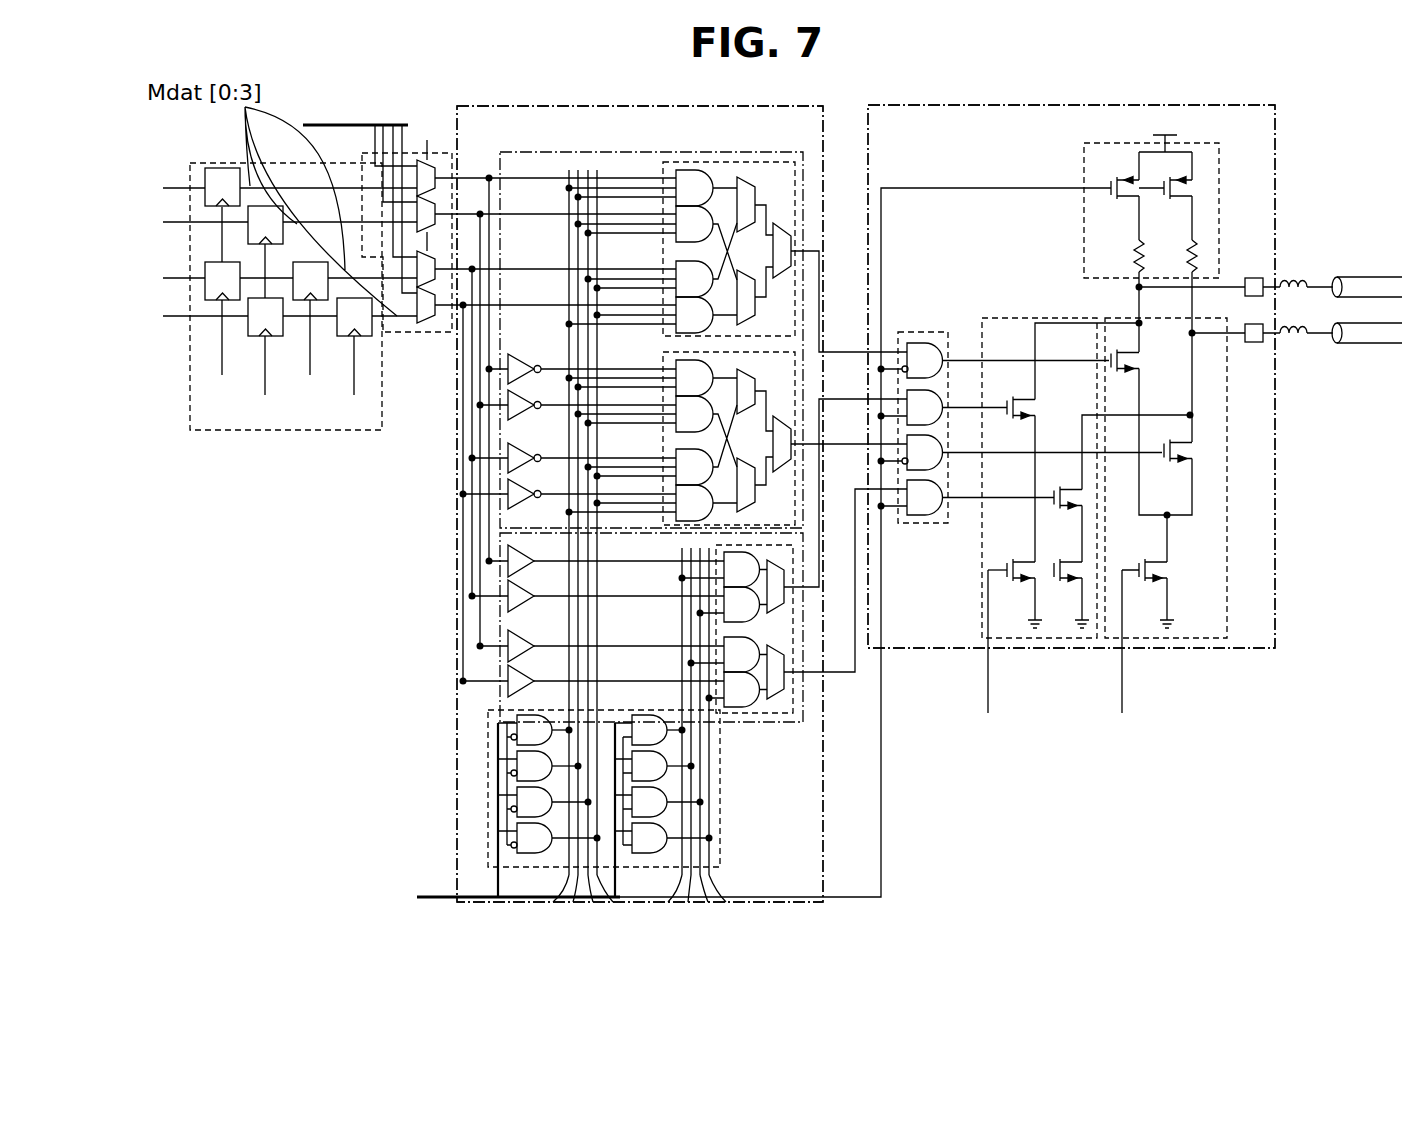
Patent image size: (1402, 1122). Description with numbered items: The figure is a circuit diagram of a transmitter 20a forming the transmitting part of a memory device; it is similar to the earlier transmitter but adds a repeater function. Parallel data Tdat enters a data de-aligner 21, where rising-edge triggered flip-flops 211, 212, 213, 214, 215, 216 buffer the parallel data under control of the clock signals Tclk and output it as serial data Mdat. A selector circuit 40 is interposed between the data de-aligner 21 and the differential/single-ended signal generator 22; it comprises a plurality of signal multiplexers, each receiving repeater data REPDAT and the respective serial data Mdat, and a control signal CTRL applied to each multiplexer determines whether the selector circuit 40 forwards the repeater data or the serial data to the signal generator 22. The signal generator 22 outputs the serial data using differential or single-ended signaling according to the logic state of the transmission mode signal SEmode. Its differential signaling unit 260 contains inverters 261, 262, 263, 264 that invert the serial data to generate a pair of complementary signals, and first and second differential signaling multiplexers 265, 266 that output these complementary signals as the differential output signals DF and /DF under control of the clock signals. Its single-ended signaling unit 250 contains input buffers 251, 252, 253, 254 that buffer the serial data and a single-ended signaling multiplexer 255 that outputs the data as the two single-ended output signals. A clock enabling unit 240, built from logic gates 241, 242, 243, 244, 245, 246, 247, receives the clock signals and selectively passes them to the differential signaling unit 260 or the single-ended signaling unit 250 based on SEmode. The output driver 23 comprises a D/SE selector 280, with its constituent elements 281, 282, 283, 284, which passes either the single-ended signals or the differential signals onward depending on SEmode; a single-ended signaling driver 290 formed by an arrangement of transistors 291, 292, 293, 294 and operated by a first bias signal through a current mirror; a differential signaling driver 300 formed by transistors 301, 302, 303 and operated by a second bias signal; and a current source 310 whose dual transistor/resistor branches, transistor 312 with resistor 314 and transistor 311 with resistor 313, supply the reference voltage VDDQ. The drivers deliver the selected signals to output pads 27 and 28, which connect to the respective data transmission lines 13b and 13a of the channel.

The transmitter 20a is at (1295, 82).
The data de-aligner 21 is at (293, 430).
The flip-flop 216 is at (222, 187).
The flip-flop 215 is at (265, 225).
The flip-flop 213 is at (222, 281).
The flip-flop 214 is at (310, 281).
The flip-flop 211 is at (265, 317).
The flip-flop 212 is at (354, 317).
The selector circuit 40 is at (425, 332).
The differential/single-ended (D/SE) signal generator 22 is at (457, 777).
The differential signaling unit 260 is at (748, 152).
The second differential signaling multiplexer 266 is at (688, 162).
The first differential signaling multiplexer 265 is at (663, 352).
The inverter 264 is at (520, 358).
The inverter 263 is at (520, 397).
The inverter 262 is at (520, 447).
The inverter 261 is at (520, 485).
The single-ended signaling unit 250 is at (787, 722).
The input buffer 254 is at (520, 550).
The input buffer 253 is at (520, 588).
The input buffer 252 is at (520, 636).
The input buffer 251 is at (520, 672).
The single-ended signaling multiplexer 255 is at (750, 713).
The clock enabling unit 240 is at (720, 817).
The logic gate 244 is at (545, 730).
The logic gate 243 is at (549, 766).
The logic gate 242 is at (554, 802).
The logic gate 241 is at (559, 838).
The logic gate 245 is at (672, 784).
The logic gate 247 is at (663, 766).
The logic gate 246 is at (668, 802).
The D/SE selector 280 is at (927, 332).
The AND gate 284 is at (1008, 360).
The AND gate 282 is at (957, 407).
The AND gate 283 is at (1034, 452).
The AND gate 281 is at (980, 497).
The output driver 23 is at (1218, 648).
The single-ended signaling driver 290 is at (1015, 318).
The transistor 292 is at (1035, 408).
The transistor 291 is at (1069, 487).
The transistor 294 is at (1016, 559).
The transistor 293 is at (1068, 559).
The current source 310 is at (1084, 160).
The transistor 312 is at (1119, 179).
The transistor 311 is at (1191, 188).
The resistor 314 is at (1126, 256).
The resistor 313 is at (1180, 253).
The differential signaling driver 300 is at (1227, 587).
The transistor 302 is at (1140, 361).
The transistor 301 is at (1193, 451).
The transistor 303 is at (1168, 570).
The output pad 27 is at (1262, 285).
The output pad 28 is at (1262, 338).
The data transmission line 13b is at (1365, 277).
The data transmission line 13a is at (1360, 345).